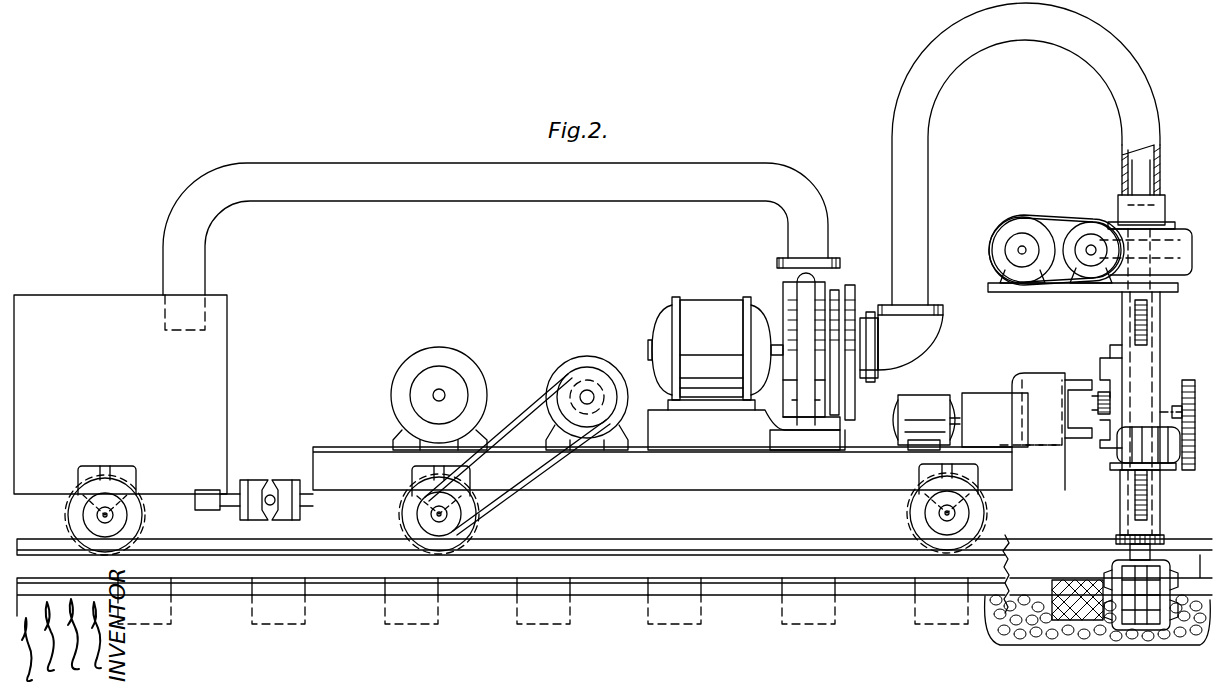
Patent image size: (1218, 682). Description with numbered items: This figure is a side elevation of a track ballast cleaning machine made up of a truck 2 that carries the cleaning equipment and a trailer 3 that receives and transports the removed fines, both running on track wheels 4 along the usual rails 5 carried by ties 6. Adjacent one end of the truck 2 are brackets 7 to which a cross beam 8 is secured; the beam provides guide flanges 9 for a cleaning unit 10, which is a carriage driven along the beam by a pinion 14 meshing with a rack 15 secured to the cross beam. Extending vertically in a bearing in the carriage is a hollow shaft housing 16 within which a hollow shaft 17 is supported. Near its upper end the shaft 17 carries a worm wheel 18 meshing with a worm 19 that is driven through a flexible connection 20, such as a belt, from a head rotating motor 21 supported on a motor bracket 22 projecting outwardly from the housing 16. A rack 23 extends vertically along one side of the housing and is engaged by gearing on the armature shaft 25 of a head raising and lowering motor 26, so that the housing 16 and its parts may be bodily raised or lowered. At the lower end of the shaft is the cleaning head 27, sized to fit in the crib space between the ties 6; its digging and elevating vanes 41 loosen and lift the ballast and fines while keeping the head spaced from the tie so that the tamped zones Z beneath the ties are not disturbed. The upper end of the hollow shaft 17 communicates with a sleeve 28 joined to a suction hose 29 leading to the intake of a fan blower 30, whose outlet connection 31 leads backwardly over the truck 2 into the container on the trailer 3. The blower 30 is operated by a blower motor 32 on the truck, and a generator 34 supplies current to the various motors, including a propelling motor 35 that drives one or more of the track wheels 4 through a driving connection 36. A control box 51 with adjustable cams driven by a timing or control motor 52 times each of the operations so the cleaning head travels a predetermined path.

The truck 2 is at (728, 469).
The trailer 3 is at (212, 424).
The track wheels 4 is at (142, 518).
The rails 5 is at (624, 546).
The ties 6 is at (660, 612).
The brackets 7 is at (1046, 462).
The cross beam 8 is at (1068, 384).
The guide flanges 9 is at (1098, 368).
The cleaning unit 10 is at (1112, 448).
The pinion 14 is at (1098, 406).
The rack 15 is at (1097, 394).
The shaft housing 16 is at (1122, 500).
The hollow shaft 17 is at (1125, 218).
The worm wheel 18 is at (1168, 244).
The worm 19 is at (1102, 262).
The flexible connection 20 is at (1050, 222).
The head rotating motor 21 is at (1000, 230).
The motor bracket 22 is at (1056, 288).
The rack 23 is at (1147, 502).
The armature shaft 25 is at (1189, 470).
The head raising and lowering motor 26 is at (1170, 462).
The cleaning head 27 is at (1098, 627).
The sleeve 28 is at (1138, 181).
The suction hose 29 is at (1128, 96).
The fan blower 30 is at (836, 394).
The outlet connection 31 is at (828, 246).
The blower motor 32 is at (712, 304).
The generator 34 is at (470, 382).
The propelling motor 35 is at (588, 364).
The driving connection 36 is at (528, 420).
The digging and elevating vanes 41 is at (1118, 630).
The control box 51 is at (968, 386).
The timing or control motor 52 is at (917, 410).
The tamped zones Z is at (1078, 620).